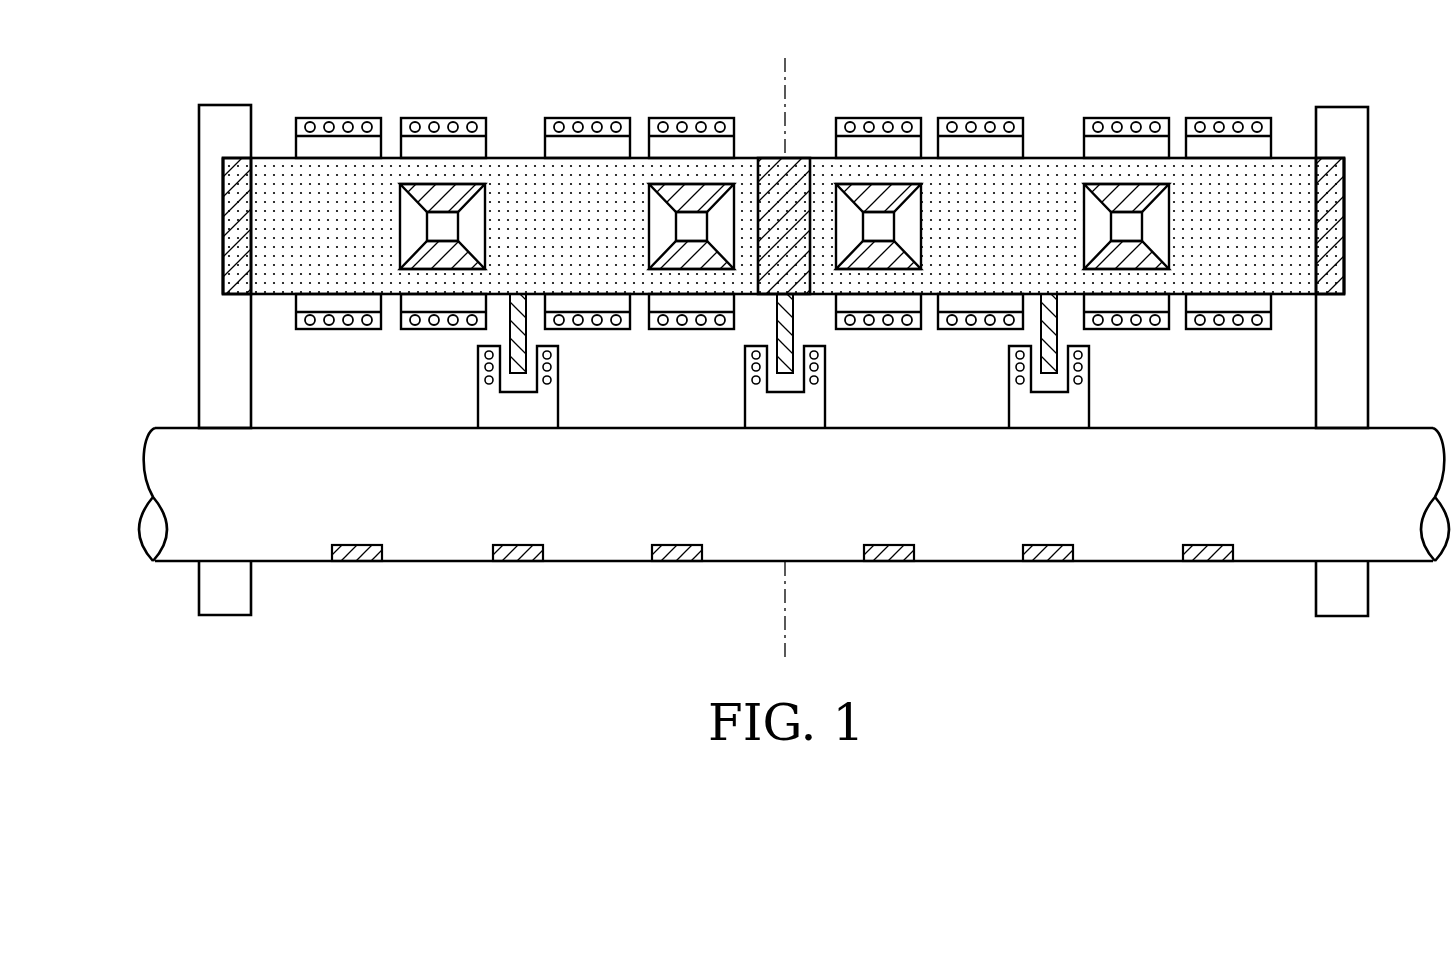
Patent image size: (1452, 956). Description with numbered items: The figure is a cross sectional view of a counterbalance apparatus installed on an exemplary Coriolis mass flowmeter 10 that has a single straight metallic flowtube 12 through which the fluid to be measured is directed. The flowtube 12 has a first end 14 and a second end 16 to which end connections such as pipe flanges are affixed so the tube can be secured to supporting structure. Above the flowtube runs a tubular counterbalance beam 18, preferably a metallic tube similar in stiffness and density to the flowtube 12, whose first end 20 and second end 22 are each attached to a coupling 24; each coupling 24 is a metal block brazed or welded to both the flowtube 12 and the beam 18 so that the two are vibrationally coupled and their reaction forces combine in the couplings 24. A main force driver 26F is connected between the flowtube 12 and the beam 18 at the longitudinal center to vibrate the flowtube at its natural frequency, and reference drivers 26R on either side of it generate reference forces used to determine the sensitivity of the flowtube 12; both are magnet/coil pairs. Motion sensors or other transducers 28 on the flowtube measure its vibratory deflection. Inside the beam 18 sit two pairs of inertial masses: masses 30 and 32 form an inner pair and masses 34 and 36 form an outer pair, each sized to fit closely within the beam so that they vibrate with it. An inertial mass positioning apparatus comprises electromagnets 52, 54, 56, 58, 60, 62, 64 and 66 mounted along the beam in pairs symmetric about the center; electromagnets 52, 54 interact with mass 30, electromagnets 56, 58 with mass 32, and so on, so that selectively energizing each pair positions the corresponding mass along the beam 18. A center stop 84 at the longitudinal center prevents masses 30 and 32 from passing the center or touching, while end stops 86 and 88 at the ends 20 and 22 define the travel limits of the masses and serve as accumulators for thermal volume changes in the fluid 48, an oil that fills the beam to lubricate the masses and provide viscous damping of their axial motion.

The Coriolis mass flowmeter 10 is at (425, 664).
The flowtube 12 is at (1253, 563).
The first end 14 is at (175, 565).
The second end 16 is at (1410, 563).
The counterbalance beam 18 is at (1045, 157).
The first end 20 is at (272, 156).
The second end 22 is at (1288, 157).
The coupling 24 is at (199, 148).
The reference driver 26R is at (566, 365).
The main force driver 26F is at (833, 370).
The motion sensor 28 is at (660, 563).
The inertial mass 30 is at (649, 236).
The inertial mass 32 is at (920, 197).
The inertial mass 34 is at (485, 200).
The inertial mass 36 is at (1084, 244).
The fluid 48 is at (1258, 237).
The electromagnet 52 is at (588, 118).
The electromagnet 54 is at (683, 118).
The electromagnet 56 is at (878, 118).
The electromagnet 58 is at (975, 118).
The electromagnet 60 is at (340, 117).
The electromagnet 62 is at (441, 117).
The electromagnet 64 is at (1130, 118).
The electromagnet 66 is at (1225, 118).
The center stop 84 is at (800, 157).
The end stop 86 is at (230, 238).
The end stop 88 is at (1345, 204).